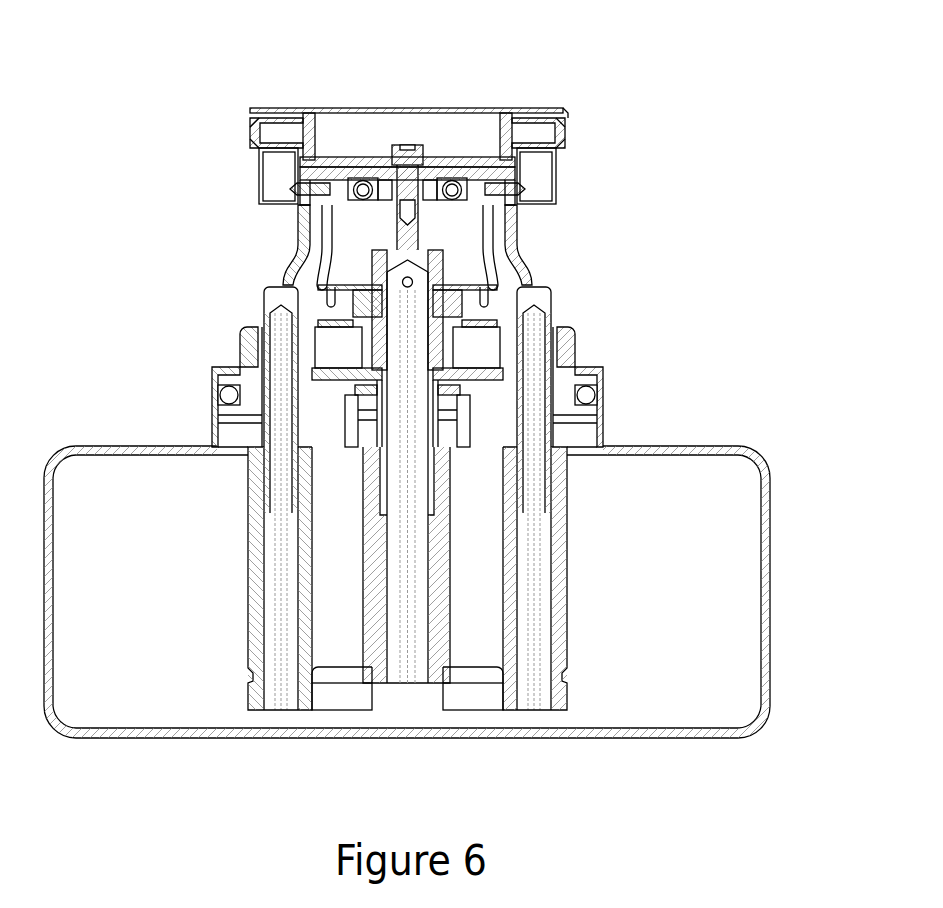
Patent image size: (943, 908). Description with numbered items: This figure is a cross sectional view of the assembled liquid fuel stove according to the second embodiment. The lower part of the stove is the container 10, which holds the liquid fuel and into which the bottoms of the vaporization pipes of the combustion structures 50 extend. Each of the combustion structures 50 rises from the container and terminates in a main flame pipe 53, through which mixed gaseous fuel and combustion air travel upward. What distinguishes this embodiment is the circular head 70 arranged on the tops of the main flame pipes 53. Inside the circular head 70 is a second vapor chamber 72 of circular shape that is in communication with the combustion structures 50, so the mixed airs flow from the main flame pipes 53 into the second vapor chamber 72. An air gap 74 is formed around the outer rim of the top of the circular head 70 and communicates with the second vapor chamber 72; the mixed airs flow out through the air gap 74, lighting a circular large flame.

The container 10 is at (768, 517).
The combustion structures 50 is at (550, 243).
The main flame pipes 53 is at (555, 184).
The circular head 70 is at (537, 106).
The second vapor chamber 72 is at (547, 136).
The air gap 74 is at (563, 120).